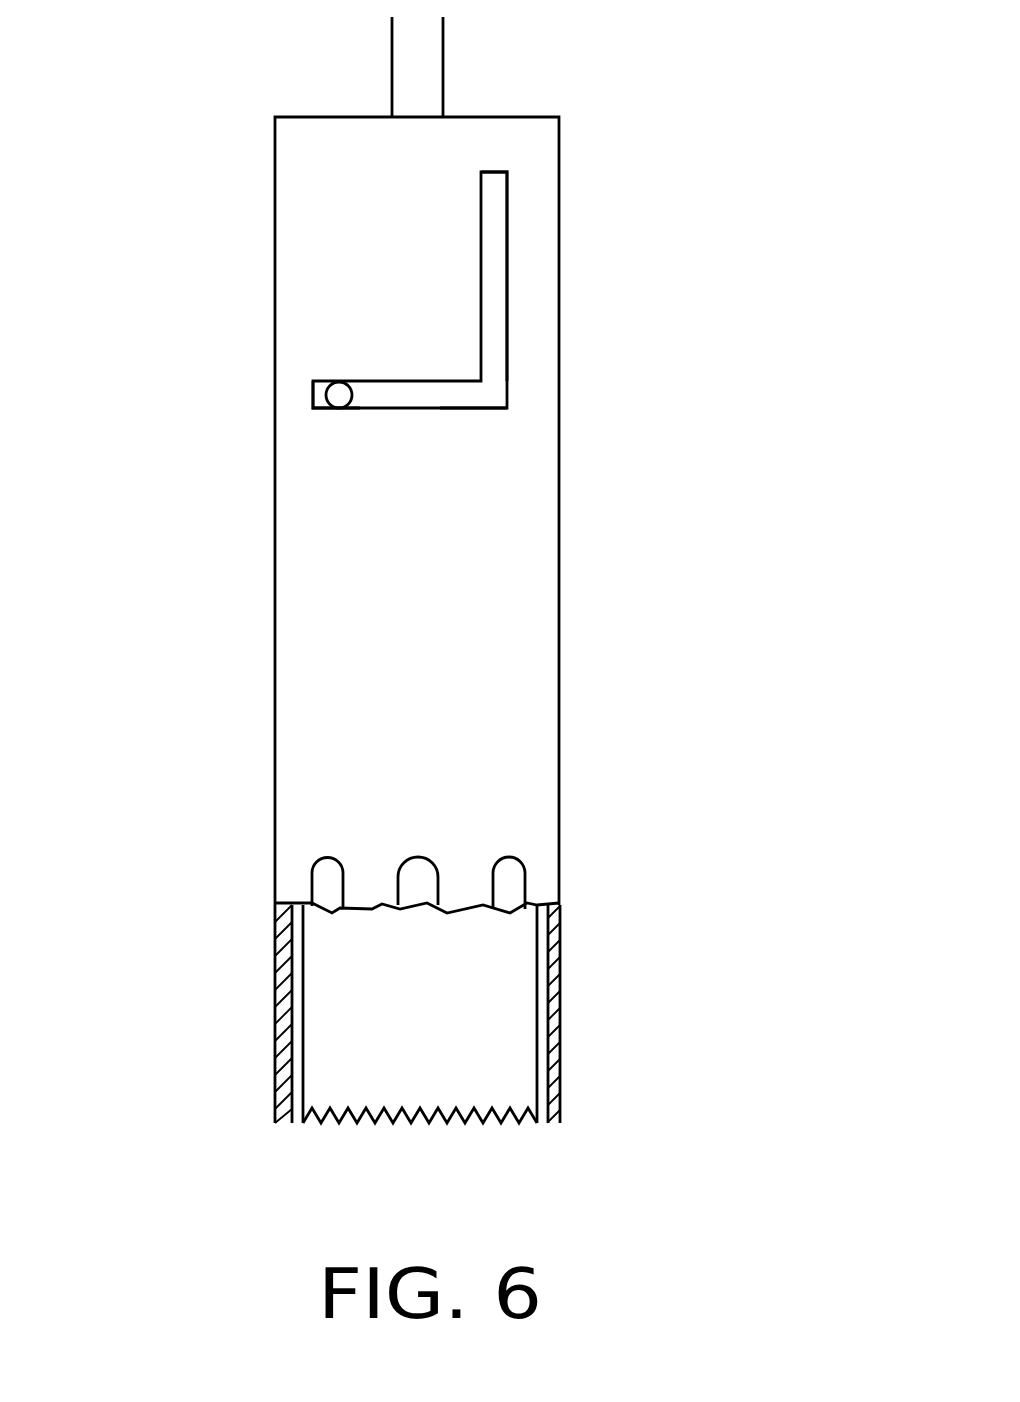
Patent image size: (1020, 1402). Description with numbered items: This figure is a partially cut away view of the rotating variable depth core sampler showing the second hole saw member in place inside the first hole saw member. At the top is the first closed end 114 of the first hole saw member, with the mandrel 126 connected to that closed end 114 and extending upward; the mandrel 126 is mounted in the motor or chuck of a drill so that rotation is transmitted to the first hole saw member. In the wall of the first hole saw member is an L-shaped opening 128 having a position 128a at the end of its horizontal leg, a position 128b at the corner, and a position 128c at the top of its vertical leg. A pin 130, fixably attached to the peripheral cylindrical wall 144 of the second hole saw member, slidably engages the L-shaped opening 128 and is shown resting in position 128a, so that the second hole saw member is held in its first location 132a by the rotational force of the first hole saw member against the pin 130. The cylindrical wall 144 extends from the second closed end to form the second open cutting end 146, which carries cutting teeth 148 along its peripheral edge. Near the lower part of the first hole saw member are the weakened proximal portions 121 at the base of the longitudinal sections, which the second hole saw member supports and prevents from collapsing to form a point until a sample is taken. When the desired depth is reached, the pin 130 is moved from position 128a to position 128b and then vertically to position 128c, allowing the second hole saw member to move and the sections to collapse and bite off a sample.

The first closed end 114 is at (313, 117).
The mandrel 126 is at (423, 72).
The L-shaped opening 128 is at (484, 330).
The position 128a is at (313, 407).
The position 128b is at (490, 394).
The position 128c is at (496, 210).
The pin 130 is at (335, 393).
The weakened proximal portions 121 is at (293, 875).
The peripheral, cylindrical wall 144 is at (493, 1027).
The second open cutting end 146 is at (494, 1108).
The first location 132a is at (543, 1123).
The cutting teeth 148 is at (418, 1123).